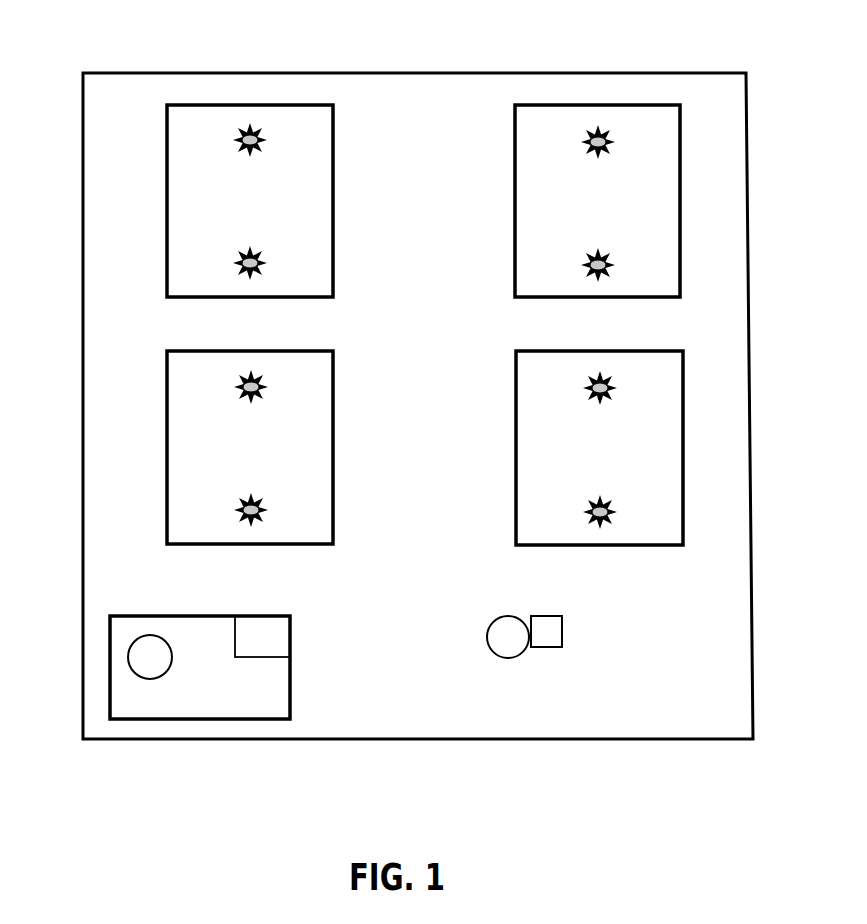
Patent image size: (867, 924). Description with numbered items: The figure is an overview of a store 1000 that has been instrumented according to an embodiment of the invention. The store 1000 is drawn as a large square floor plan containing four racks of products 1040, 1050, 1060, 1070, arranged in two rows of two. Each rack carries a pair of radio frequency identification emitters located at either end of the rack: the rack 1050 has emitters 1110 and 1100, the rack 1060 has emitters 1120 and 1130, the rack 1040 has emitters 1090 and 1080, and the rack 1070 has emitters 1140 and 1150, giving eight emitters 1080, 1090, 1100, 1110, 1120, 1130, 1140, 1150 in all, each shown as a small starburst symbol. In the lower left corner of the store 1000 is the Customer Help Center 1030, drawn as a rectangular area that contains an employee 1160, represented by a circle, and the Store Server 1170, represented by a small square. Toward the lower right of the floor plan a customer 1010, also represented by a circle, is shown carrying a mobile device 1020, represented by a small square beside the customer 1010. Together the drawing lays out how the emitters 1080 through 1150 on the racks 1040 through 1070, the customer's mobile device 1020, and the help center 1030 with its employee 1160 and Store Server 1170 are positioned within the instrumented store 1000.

The store 1000 is at (703, 740).
The customer 1010 is at (505, 658).
The mobile device 1020 is at (548, 647).
The Customer Help Center 1030 is at (198, 717).
The rack of products 1040 is at (175, 460).
The rack of products 1050 is at (313, 104).
The rack of products 1060 is at (663, 104).
The rack of products 1070 is at (683, 449).
The radio frequency identification emitter 1080 is at (235, 510).
The radio frequency identification emitter 1090 is at (235, 387).
The radio frequency identification emitter 1100 is at (236, 264).
The radio frequency identification emitter 1110 is at (247, 131).
The radio frequency identification emitter 1120 is at (612, 142).
The radio frequency identification emitter 1130 is at (612, 265).
The radio frequency identification emitter 1140 is at (614, 388).
The radio frequency identification emitter 1150 is at (615, 512).
The employee 1160 is at (150, 678).
The Store Server 1170 is at (262, 652).